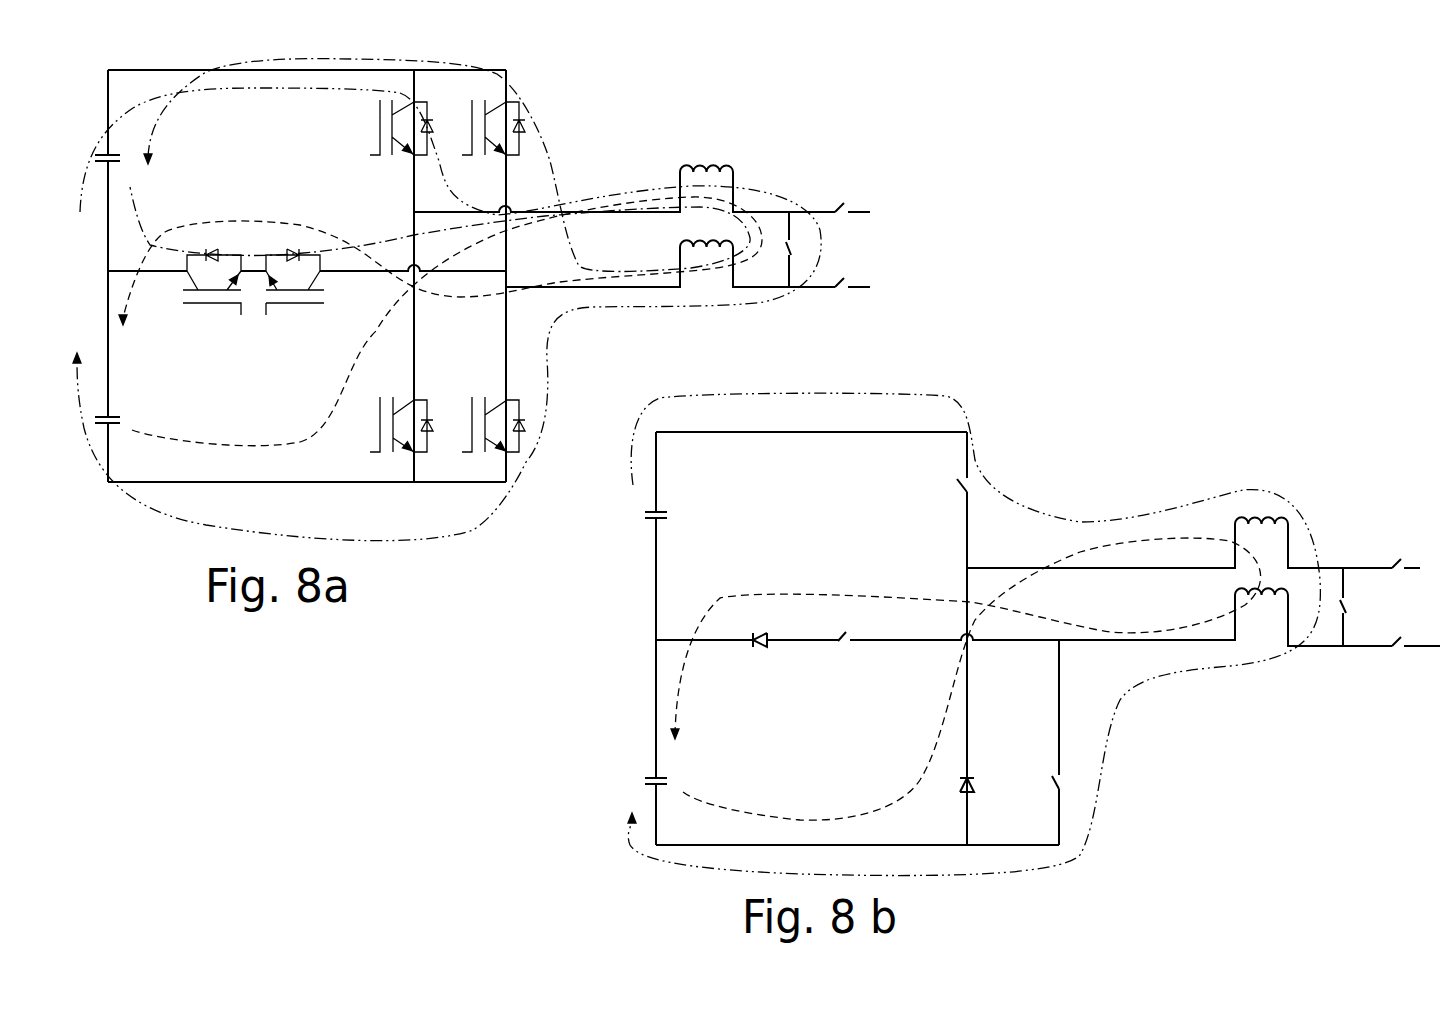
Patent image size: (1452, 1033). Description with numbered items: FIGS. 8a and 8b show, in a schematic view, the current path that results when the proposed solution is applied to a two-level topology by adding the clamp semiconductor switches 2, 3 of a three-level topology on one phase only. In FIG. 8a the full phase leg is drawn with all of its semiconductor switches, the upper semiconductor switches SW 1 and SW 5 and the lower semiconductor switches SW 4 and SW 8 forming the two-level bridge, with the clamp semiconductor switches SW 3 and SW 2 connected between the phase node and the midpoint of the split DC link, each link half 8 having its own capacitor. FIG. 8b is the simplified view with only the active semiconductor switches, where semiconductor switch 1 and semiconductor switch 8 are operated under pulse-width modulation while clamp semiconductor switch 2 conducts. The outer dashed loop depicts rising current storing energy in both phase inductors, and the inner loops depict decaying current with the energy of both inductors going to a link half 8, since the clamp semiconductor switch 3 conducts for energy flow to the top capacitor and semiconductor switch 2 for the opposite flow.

In FIG. 8A, the switch SW 1 is at (389, 113).
In FIG. 8B, the switch SW 1 is at (910, 638).
In FIG. 8A, the clamp semiconductor switch 2 is at (292, 270).
In FIG. 8B, the clamp semiconductor switch 2 is at (791, 668).
In FIG. 8A, the clamp semiconductor switch 3 is at (209, 270).
In FIG. 8A, the switch SW 4 is at (385, 440).
In FIG. 8A, the switch SW 5 is at (476, 113).
In FIG. 8A, the link half 8 is at (479, 440).
In FIG. 8B, the link half 8 is at (1009, 742).